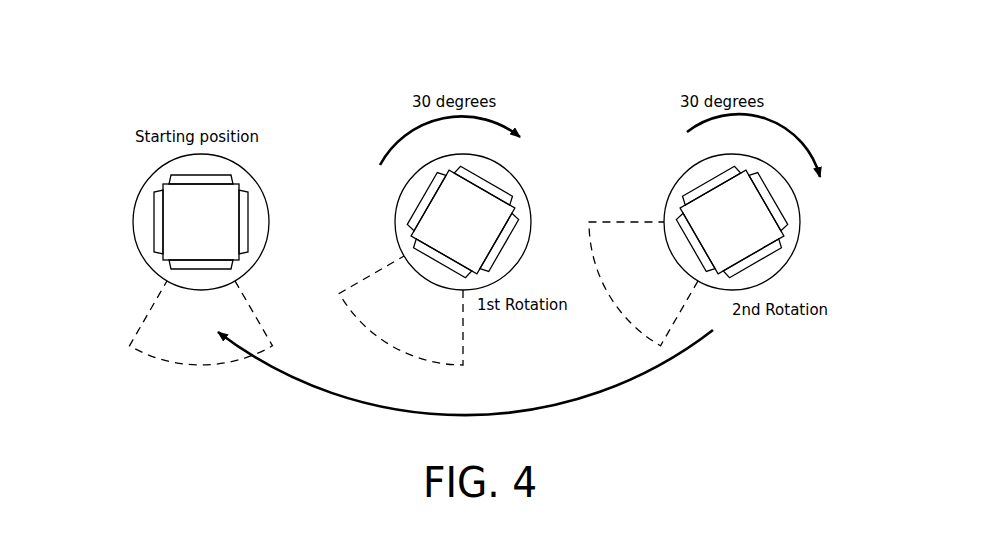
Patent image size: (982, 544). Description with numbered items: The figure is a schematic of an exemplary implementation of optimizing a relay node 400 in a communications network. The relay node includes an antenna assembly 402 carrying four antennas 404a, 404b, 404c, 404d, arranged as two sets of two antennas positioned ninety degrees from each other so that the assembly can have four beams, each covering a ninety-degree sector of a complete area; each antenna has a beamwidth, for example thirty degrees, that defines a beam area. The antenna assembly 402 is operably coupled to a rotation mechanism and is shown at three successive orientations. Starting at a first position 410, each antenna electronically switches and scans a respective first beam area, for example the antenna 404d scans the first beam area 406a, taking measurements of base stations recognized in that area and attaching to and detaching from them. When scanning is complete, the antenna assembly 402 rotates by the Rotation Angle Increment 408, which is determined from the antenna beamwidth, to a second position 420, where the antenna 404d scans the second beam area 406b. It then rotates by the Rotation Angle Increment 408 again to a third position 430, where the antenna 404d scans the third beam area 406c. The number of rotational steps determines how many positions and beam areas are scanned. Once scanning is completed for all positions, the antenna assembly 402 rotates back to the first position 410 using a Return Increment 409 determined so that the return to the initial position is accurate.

The optimizing a relay node 400 is at (677, 430).
The antenna assembly 402 is at (187, 230).
The antenna 404a is at (153, 222).
The antenna 404b is at (218, 178).
The antenna 404c is at (246, 222).
The antenna 404d is at (205, 270).
The first beam area 406a is at (195, 367).
The second beam area 406b is at (390, 345).
The third beam area 406c is at (627, 323).
The Rotation Angle Increment 408 is at (410, 135).
The Return Increment 409 is at (327, 395).
The first position 410 is at (212, 77).
The second position 420 is at (473, 77).
The third position 430 is at (743, 77).